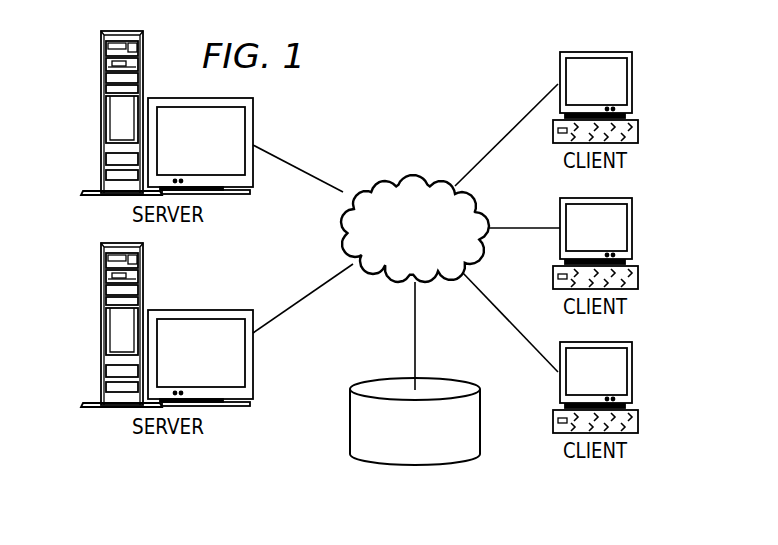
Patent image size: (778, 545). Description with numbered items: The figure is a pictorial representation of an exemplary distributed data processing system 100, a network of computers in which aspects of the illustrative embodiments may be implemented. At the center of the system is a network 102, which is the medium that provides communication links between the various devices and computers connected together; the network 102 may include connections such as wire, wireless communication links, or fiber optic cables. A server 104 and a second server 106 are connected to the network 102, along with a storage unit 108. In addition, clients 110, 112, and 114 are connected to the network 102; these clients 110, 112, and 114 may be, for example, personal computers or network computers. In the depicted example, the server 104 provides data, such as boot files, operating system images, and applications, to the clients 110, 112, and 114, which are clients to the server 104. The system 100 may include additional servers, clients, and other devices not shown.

The distributed data processing system 100 is at (470, 61).
The network 102 is at (384, 179).
The server 104 is at (100, 112).
The server 106 is at (100, 325).
The storage unit 108 is at (397, 465).
The client 110 is at (632, 86).
The client 112 is at (632, 231).
The client 114 is at (632, 371).